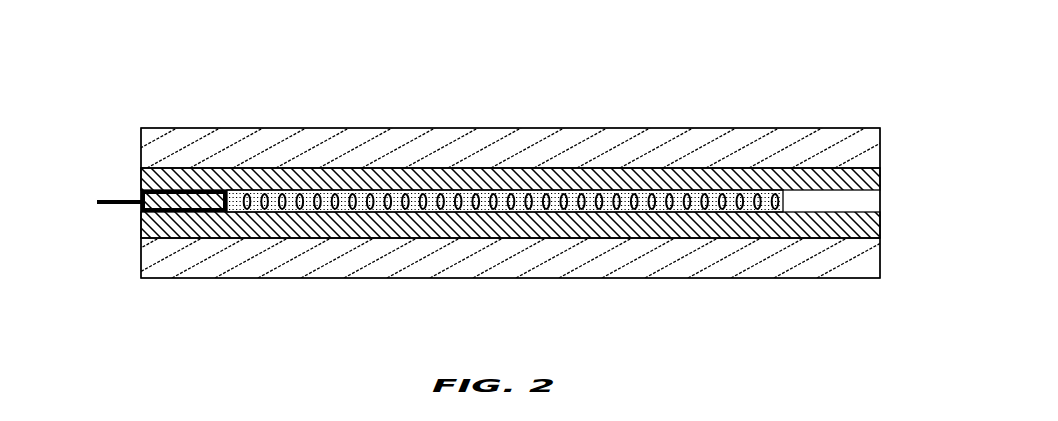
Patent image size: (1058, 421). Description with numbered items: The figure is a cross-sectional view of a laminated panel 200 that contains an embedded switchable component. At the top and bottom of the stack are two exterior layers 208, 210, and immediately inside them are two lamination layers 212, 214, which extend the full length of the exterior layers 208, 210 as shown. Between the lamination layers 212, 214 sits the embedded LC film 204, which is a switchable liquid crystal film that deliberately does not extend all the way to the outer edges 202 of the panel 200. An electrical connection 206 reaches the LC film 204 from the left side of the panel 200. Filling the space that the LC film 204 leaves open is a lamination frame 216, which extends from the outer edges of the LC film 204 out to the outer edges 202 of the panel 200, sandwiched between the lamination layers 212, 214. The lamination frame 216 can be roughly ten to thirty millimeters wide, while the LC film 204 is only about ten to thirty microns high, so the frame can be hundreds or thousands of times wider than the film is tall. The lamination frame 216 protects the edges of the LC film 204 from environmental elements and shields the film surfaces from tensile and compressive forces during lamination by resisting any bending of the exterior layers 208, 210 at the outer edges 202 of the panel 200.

The panel 200 is at (126, 85).
The outer edges 202 is at (128, 258).
The LC film 204 is at (343, 191).
The electrical connection 206 is at (112, 201).
The exterior layer 208 is at (880, 128).
The exterior layer 210 is at (880, 253).
The lamination layer 212 is at (880, 177).
The lamination layer 214 is at (880, 228).
The lamination frame 216 is at (880, 202).